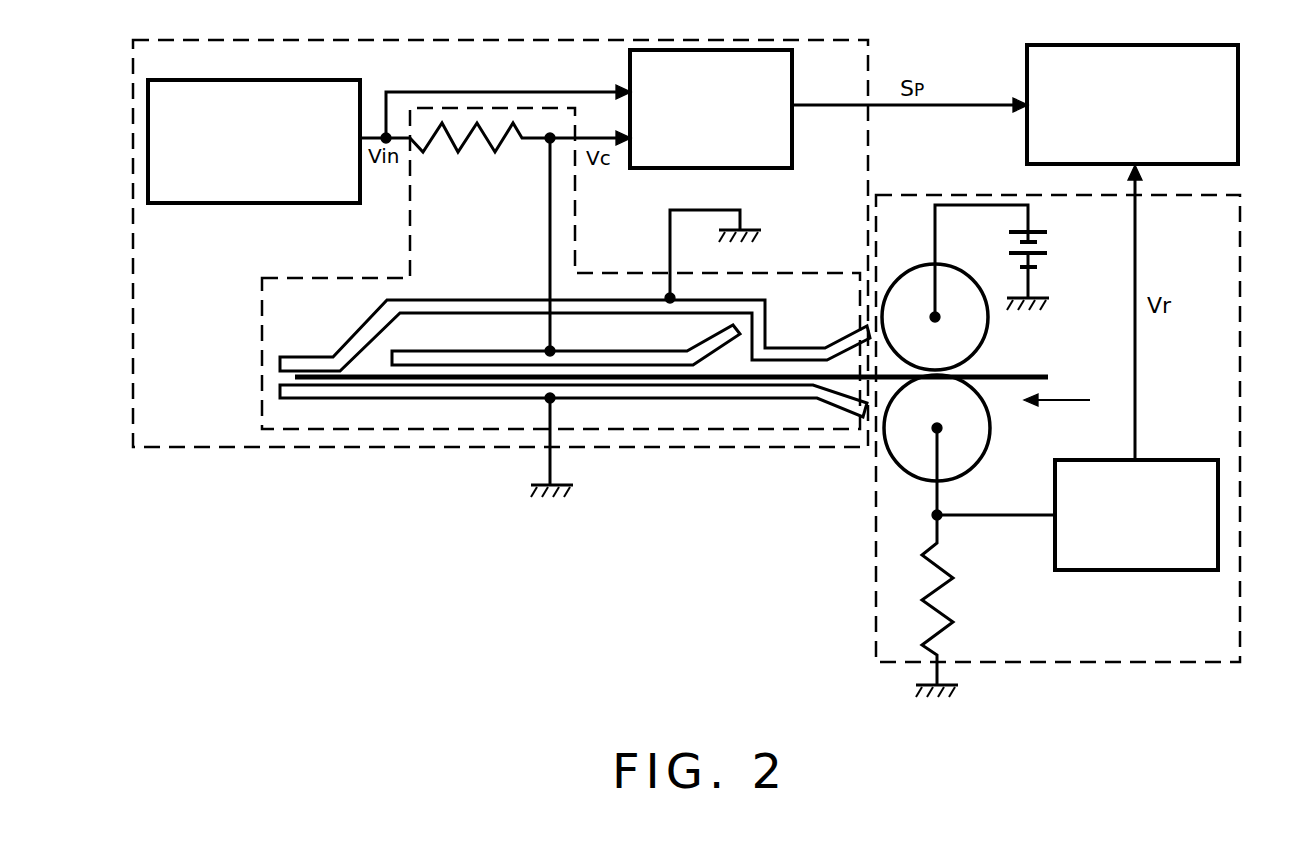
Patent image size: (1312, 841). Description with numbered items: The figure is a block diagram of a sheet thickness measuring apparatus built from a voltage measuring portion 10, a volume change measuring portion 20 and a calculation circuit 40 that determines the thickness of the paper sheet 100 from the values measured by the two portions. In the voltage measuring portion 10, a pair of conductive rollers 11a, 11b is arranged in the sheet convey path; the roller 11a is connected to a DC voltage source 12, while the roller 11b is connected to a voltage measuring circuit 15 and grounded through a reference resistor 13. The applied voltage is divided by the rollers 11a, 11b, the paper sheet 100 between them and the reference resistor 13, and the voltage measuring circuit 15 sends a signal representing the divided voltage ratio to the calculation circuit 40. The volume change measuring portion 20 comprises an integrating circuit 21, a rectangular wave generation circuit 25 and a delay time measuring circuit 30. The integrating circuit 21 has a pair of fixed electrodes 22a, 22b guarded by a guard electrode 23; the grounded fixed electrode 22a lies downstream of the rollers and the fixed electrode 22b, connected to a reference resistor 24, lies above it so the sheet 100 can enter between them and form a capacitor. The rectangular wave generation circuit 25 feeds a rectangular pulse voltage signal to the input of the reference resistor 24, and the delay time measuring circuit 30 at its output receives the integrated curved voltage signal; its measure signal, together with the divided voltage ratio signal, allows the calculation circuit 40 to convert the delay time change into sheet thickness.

The voltage measuring portion 10 is at (1242, 385).
The conductive roller 11a is at (907, 290).
The conductive roller 11b is at (900, 450).
The DC voltage source 12 is at (1050, 252).
The reference resistor 13 is at (945, 600).
The voltage measuring circuit 15 is at (1176, 458).
The volume change measuring portion 20 is at (410, 450).
The integrating circuit 21 is at (252, 306).
The fixed electrode 22a is at (290, 400).
The fixed electrode 22b is at (525, 346).
The guard electrode 23 is at (495, 300).
The reference resistor 24 is at (492, 150).
The rectangular wave generation circuit 25 is at (350, 80).
The delay time measuring circuit 30 is at (795, 84).
The calculation circuit 40 is at (1143, 45).
The paper sheet 100 is at (1012, 366).